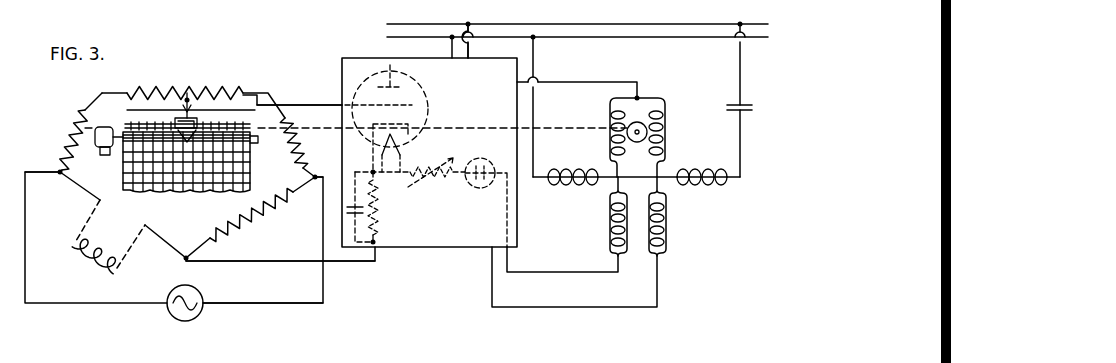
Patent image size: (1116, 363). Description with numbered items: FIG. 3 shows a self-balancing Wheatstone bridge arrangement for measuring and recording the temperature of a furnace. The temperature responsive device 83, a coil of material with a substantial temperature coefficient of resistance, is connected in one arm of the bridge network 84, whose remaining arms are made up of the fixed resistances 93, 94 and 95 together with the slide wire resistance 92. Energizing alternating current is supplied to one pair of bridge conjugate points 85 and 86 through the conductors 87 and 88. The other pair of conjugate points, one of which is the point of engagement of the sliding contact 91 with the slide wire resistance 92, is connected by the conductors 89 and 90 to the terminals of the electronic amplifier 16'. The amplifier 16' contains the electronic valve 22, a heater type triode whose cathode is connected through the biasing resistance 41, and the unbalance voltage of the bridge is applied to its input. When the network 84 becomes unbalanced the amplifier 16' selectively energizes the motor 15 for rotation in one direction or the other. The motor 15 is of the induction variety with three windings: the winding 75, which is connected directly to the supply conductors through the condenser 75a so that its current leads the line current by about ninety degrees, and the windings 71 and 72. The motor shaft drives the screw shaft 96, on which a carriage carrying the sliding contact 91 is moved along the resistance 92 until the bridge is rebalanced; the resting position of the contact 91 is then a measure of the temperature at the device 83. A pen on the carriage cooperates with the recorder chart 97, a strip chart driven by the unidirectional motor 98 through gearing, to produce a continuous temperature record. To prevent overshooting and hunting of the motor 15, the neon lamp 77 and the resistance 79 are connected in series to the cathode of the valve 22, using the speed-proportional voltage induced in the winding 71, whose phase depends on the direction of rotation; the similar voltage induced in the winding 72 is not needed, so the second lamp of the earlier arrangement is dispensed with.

The motor 15 is at (692, 106).
The electronic amplifier 16' is at (429, 166).
The electronic valve 22 is at (420, 86).
The biasing resistance 41 is at (384, 212).
The motor winding 71 is at (608, 223).
The motor winding 72 is at (666, 220).
The winding 75 is at (710, 167).
The condenser 75a is at (745, 109).
The neon lamp 77 is at (490, 160).
The resistance 79 is at (430, 182).
The temperature responsive device 83 is at (83, 262).
The bridge network 84 is at (177, 131).
The bridge conjugate point 85 is at (58, 171).
The bridge conjugate point 86 is at (315, 176).
The conductor 87 is at (148, 302).
The conductor 88 is at (242, 302).
The conductor 89 is at (318, 105).
The conductor 90 is at (284, 259).
The sliding contact 91 is at (194, 99).
The slide wire resistance 92 is at (152, 88).
The fixed resistance 93 is at (260, 210).
The fixed resistance 94 is at (80, 136).
The fixed resistance 95 is at (298, 166).
The screw shaft 96 is at (250, 124).
The recorder chart 97 is at (180, 186).
The unidirectional motor 98 is at (97, 140).